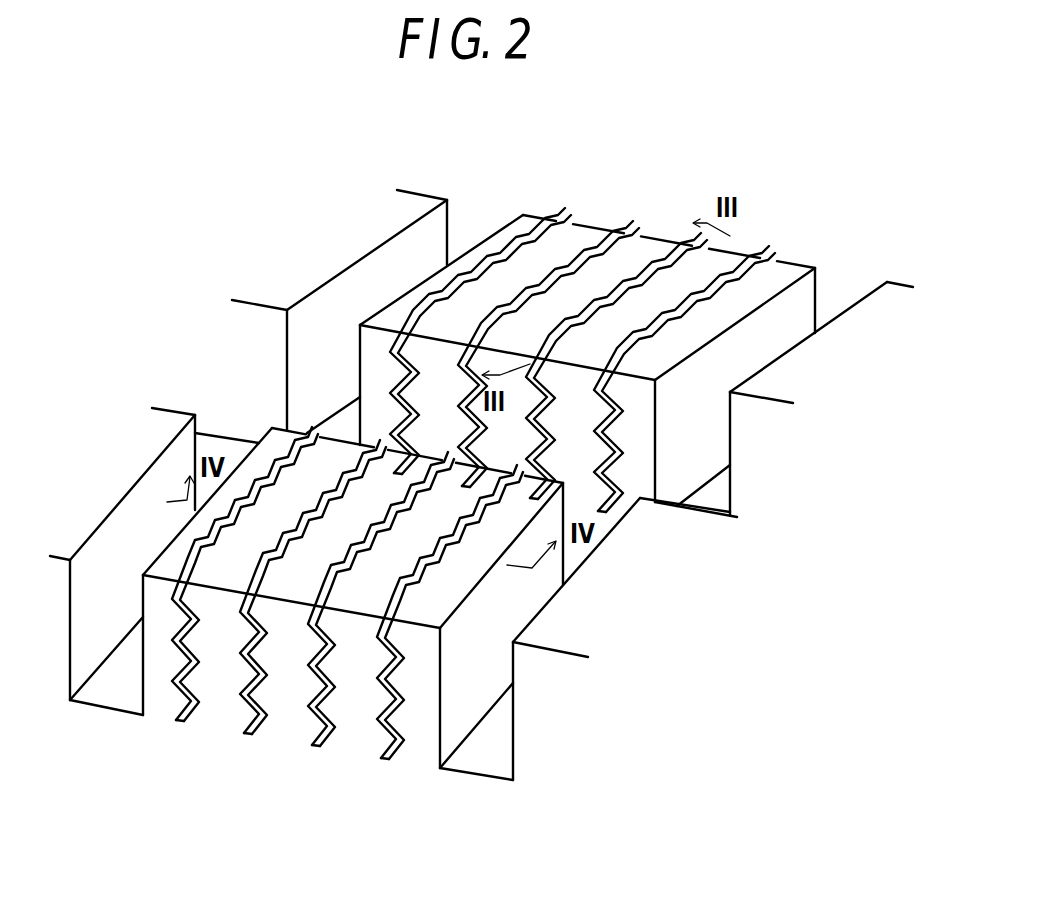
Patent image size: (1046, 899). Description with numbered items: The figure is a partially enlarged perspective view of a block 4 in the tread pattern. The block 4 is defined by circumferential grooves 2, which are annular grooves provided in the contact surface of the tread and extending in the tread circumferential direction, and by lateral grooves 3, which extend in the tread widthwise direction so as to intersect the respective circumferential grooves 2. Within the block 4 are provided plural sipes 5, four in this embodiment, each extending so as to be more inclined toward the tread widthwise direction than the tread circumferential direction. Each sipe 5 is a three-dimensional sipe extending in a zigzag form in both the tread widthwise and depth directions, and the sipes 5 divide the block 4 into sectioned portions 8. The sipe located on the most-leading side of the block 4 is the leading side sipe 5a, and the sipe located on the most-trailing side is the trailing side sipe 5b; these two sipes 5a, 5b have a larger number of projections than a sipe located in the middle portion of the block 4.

The circumferential groove 2 is at (213, 375).
The lateral groove 3 is at (437, 250).
The block 4 is at (652, 242).
The sipe 5 is at (197, 572).
The leading side sipe 5a is at (560, 225).
The trailing side sipe 5b is at (772, 262).
The sectioned portions of block 8 is at (300, 593).